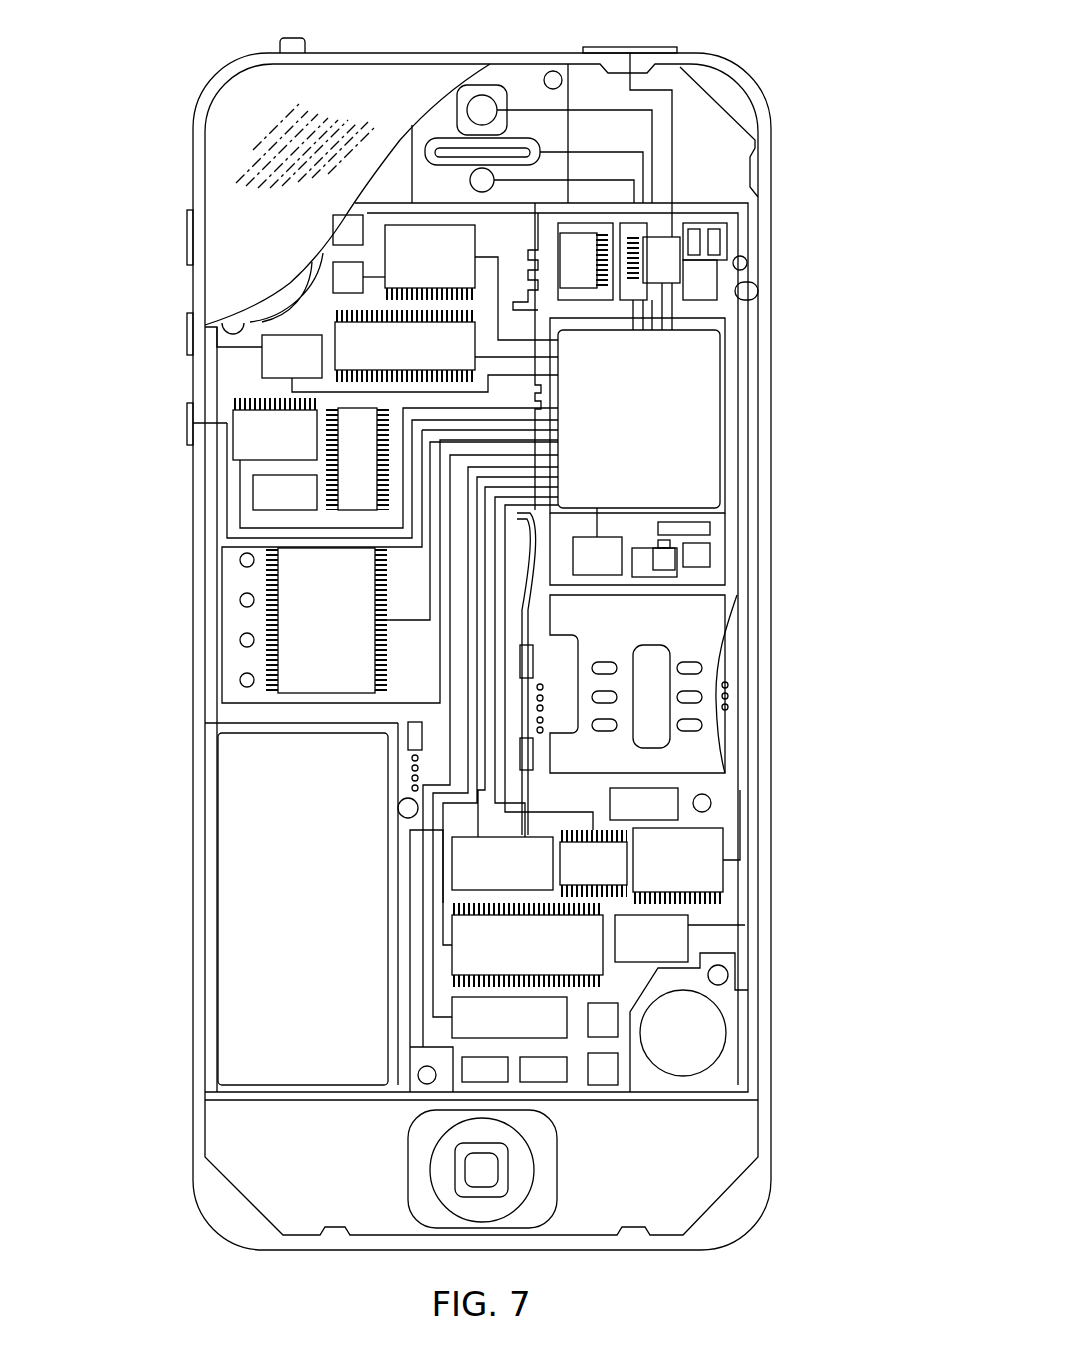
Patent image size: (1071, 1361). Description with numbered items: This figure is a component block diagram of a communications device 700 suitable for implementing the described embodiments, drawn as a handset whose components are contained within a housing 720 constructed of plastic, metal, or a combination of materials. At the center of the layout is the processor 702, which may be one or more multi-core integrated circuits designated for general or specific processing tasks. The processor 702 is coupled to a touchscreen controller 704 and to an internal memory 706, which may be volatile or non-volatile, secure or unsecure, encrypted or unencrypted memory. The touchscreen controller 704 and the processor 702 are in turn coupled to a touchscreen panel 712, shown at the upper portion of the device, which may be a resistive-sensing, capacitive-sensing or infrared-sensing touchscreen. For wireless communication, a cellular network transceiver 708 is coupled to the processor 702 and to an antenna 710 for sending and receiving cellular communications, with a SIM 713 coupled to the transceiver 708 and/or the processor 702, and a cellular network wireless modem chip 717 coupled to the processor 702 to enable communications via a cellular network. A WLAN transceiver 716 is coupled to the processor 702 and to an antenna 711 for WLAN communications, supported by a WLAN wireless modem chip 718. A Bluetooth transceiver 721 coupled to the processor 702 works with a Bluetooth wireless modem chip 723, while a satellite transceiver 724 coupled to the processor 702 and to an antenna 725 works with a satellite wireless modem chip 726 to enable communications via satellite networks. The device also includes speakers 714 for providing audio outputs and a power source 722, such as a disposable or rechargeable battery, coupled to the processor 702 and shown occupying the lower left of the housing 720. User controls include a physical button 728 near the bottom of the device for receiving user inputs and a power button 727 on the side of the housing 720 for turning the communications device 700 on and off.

The communications device 700 is at (173, 93).
The processor 702 is at (637, 415).
The touchscreen controller 704 is at (430, 259).
The internal memory 706 is at (405, 346).
The cellular network transceiver 708 is at (673, 240).
The antenna 710 is at (610, 555).
The antenna 711 is at (718, 283).
The touchscreen panel 712 is at (222, 165).
The SIM card 713 is at (308, 457).
The speakers 714 is at (443, 138).
The WLAN transceiver 716 is at (527, 945).
The cellular network wireless modem chip 717 is at (509, 1017).
The WLAN wireless modem chip 718 is at (651, 938).
The housing 720 is at (771, 1110).
The Bluetooth transceiver 721 is at (593, 863).
The power source 722 is at (448, 909).
The Bluetooth wireless modem chip 723 is at (678, 863).
The satellite transceiver 724 is at (310, 620).
The antenna 725 is at (502, 863).
The satellite wireless modem chip 726 is at (292, 356).
The power button 727 is at (187, 405).
The physical button 728 is at (520, 1182).